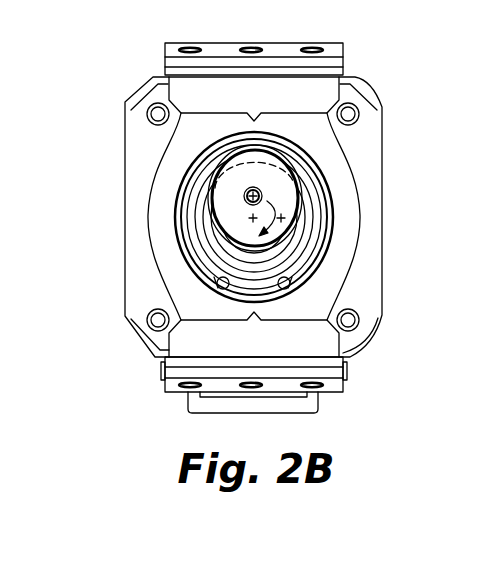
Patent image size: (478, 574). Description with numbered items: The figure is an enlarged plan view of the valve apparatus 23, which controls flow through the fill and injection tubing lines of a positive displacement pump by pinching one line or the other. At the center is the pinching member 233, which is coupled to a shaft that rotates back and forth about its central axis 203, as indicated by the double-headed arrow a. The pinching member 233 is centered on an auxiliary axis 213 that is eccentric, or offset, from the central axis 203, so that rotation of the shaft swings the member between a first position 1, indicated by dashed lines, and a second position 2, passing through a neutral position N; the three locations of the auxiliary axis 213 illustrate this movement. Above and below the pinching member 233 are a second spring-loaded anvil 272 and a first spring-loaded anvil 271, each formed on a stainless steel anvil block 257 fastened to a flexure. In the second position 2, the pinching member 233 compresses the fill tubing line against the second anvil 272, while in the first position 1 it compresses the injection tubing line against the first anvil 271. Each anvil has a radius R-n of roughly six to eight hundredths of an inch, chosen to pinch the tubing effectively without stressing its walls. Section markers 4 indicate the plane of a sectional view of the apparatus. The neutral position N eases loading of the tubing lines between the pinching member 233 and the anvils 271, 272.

The valve apparatus 23 is at (396, 68).
The radius of anvil R-n is at (238, 121).
The first position 1 is at (310, 313).
The second spring-loaded anvil 272 is at (250, 113).
The first spring-loaded anvil 271 is at (251, 315).
The anvil block 257 is at (286, 103).
The section line 4- 4 is at (283, 24).
The neutral position N is at (336, 214).
The second position 2 is at (276, 137).
The pinching member 233 is at (306, 176).
The auxiliary axis 213 is at (238, 192).
The central axis 203 is at (238, 215).
The double-headed arrow a is at (272, 204).